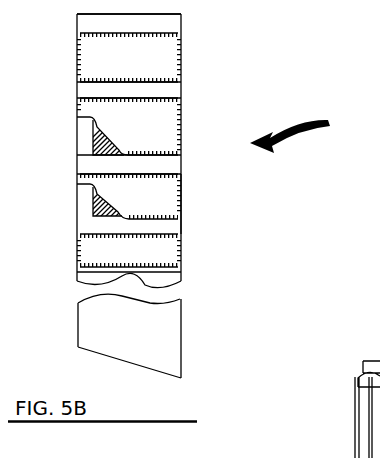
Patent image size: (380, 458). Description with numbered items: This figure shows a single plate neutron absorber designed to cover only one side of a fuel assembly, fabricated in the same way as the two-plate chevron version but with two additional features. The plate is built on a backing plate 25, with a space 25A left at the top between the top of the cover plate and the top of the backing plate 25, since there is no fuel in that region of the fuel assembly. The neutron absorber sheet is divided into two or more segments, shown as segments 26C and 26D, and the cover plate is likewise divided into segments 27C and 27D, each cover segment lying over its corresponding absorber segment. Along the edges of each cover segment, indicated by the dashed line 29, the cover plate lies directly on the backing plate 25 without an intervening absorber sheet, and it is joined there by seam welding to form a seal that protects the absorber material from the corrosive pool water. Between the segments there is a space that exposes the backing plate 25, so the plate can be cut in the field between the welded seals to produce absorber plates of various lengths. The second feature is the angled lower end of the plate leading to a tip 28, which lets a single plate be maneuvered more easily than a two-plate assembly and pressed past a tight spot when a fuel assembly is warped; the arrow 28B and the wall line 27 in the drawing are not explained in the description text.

The space 25A is at (157, 22).
The dashed line 29 is at (182, 60).
The backing plate 25 is at (163, 90).
The cover plate segment 27C is at (163, 116).
The neutron absorber sheet segment 26C is at (93, 147).
The cover plate segment 27D is at (160, 193).
The neutron absorber sheet segment 26D is at (93, 203).
The chamber wall 27 is at (181, 214).
The tip 28 is at (172, 357).
The direction of rotation 28B is at (311, 131).